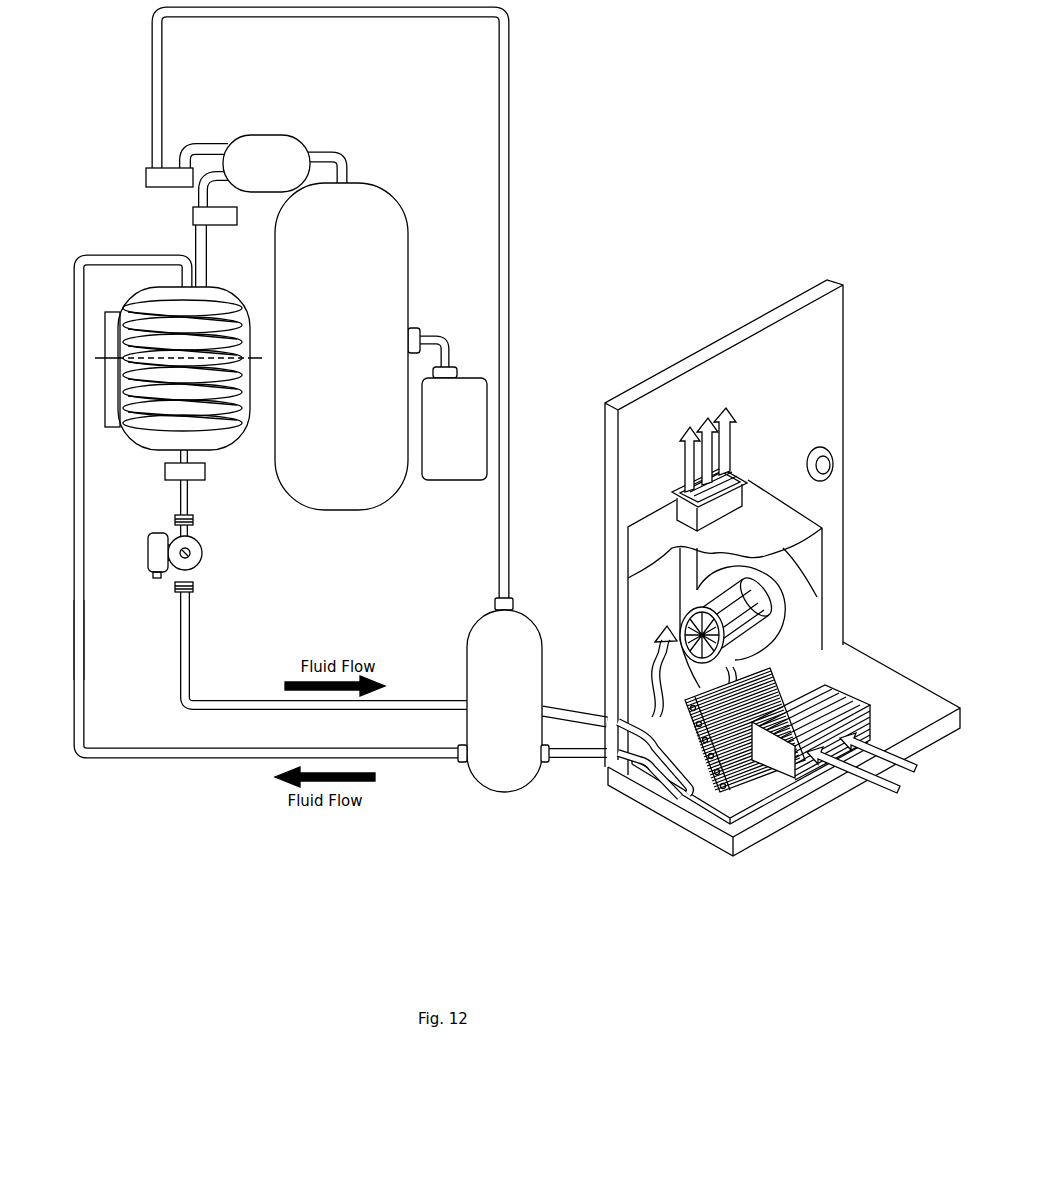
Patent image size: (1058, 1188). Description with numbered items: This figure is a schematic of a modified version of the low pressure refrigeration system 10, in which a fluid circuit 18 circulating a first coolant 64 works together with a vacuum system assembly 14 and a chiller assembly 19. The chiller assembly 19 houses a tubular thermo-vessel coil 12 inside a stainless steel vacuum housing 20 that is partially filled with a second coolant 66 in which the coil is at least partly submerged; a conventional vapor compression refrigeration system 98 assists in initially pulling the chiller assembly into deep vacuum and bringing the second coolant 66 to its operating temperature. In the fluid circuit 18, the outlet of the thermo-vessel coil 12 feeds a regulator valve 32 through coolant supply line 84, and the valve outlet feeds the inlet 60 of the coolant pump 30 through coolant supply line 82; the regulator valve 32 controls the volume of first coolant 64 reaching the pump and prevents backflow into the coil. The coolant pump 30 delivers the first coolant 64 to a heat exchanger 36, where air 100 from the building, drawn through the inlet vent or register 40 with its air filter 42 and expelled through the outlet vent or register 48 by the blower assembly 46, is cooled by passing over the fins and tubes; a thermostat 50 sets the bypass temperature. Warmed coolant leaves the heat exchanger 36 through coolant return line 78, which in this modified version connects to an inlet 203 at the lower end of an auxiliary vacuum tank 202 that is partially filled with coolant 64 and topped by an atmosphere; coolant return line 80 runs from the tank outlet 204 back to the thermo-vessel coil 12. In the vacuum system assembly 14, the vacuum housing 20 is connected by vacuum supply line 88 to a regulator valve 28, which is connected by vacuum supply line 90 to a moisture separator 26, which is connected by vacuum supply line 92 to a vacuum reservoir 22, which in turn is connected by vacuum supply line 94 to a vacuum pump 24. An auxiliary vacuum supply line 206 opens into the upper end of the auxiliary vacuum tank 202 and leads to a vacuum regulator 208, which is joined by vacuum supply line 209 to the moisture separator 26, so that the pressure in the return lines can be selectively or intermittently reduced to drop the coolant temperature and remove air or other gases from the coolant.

The low pressure refrigeration system 10 is at (738, 386).
The thermo-vessel coil 12 is at (135, 320).
The vacuum system assembly 14 is at (363, 305).
The fluid circuit 18 is at (323, 471).
The chiller assembly 19 is at (140, 280).
The vacuum housing 20 is at (128, 437).
The vacuum reservoir 22 is at (372, 511).
The vacuum pump 24 is at (458, 482).
The moisture separator 26 is at (264, 135).
The regulator valve 28 is at (237, 217).
The coolant pump 30 is at (203, 563).
The regulator valve 32 is at (198, 482).
The heat exchanger 36 is at (665, 640).
The inlet vent or register 40 is at (872, 722).
The air filter 42 is at (815, 698).
The blower assembly 46 is at (822, 690).
The outlet vent or register 48 is at (745, 478).
The thermostat 50 is at (836, 458).
The inlet of the coolant pump 60 is at (200, 532).
The first coolant 64 is at (73, 640).
The second coolant 66 is at (233, 445).
The coolant return line 78 is at (585, 760).
The coolant return line 80 is at (73, 366).
The coolant supply line 82 is at (194, 520).
The coolant supply line 84 is at (167, 468).
The vacuum supply line 88 is at (207, 271).
The vacuum supply line 90 is at (212, 175).
The vacuum supply line 92 is at (317, 147).
The vacuum supply line 94 is at (447, 333).
The vapor compression refrigeration system 98 is at (105, 405).
The air 100 is at (858, 781).
The auxiliary vacuum tank 202 is at (503, 793).
The inlet 203 is at (545, 765).
The outlet 204 is at (462, 765).
The auxiliary vacuum supply line 206 is at (511, 92).
The vacuum regulator 208 is at (150, 190).
The vacuum supply line 209 is at (200, 143).